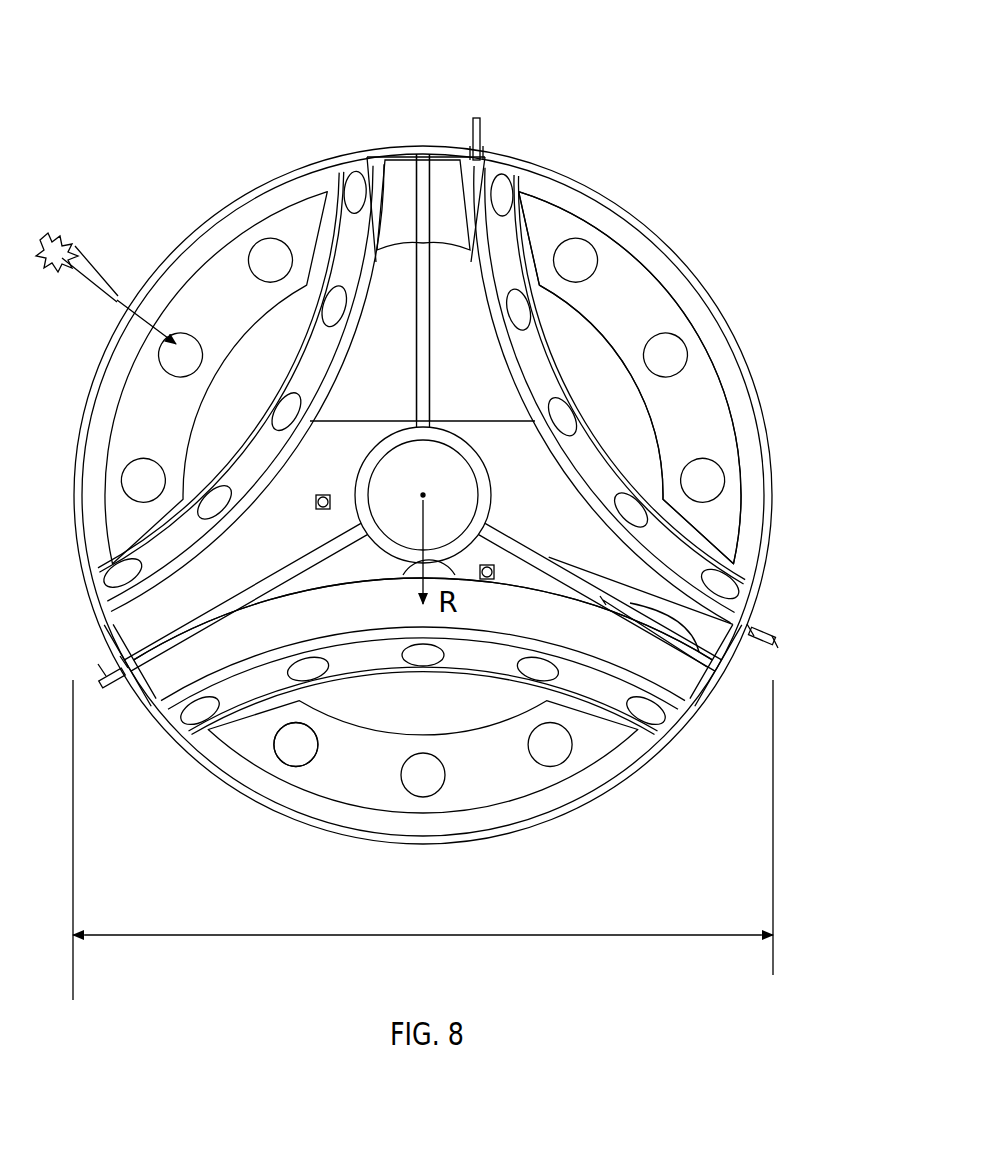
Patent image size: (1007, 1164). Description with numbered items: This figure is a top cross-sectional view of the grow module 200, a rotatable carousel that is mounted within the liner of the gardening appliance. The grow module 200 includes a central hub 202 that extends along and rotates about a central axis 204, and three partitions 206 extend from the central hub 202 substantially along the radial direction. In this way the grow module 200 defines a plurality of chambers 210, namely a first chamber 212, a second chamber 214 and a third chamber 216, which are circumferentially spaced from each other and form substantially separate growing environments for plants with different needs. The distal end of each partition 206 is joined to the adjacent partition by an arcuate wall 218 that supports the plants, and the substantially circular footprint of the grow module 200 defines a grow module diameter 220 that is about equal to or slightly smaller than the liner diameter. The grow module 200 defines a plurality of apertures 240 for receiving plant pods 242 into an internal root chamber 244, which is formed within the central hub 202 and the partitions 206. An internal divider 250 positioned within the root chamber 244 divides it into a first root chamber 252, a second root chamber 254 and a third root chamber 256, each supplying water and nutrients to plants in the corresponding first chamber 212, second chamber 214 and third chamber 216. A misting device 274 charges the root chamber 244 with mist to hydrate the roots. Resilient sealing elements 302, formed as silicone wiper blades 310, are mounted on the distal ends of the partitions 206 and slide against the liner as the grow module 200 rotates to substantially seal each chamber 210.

The grow module 200 is at (792, 144).
The central hub 202 is at (491, 491).
The central axis 204 is at (421, 495).
The partition 206 is at (640, 680).
The chamber 210 is at (640, 434).
The first chamber 212 is at (608, 404).
The second chamber 214 is at (238, 322).
The third chamber 216 is at (413, 747).
The arcuate wall 218 is at (568, 656).
The grow module diameter 220 is at (166, 948).
The aperture 240 is at (291, 750).
The plant pod 242 is at (91, 298).
The root chamber 244 is at (230, 648).
The internal divider 250 is at (722, 668).
The first root chamber 252 is at (443, 336).
The second root chamber 254 is at (369, 336).
The third root chamber 256 is at (294, 626).
The misting device 274 is at (318, 512).
The resilient sealing element 302 is at (478, 126).
The wiper blade 310 is at (482, 148).